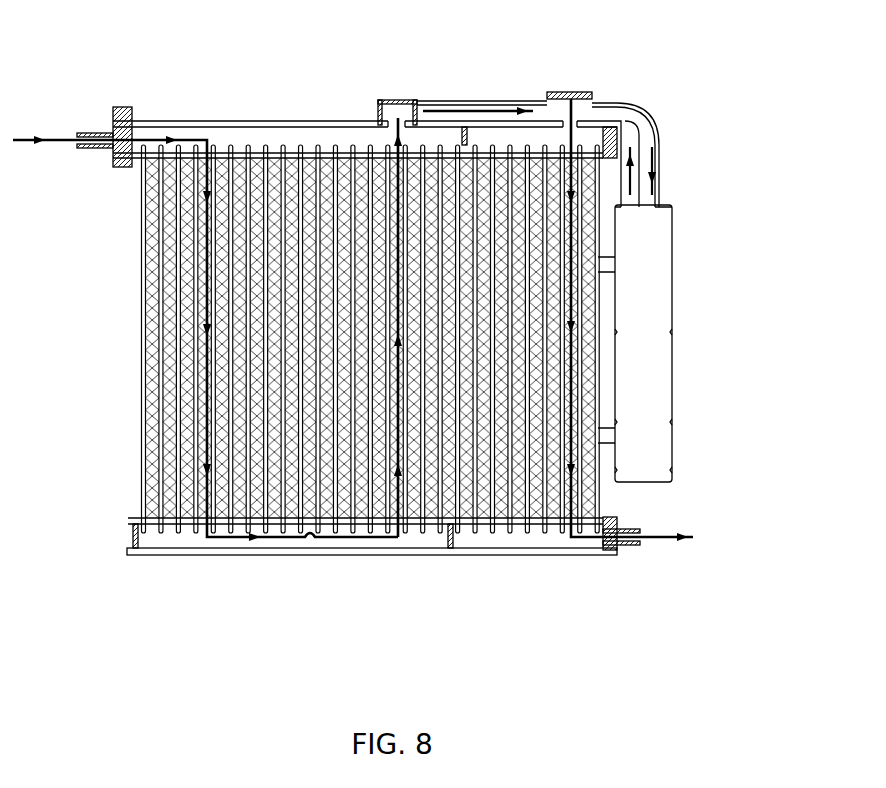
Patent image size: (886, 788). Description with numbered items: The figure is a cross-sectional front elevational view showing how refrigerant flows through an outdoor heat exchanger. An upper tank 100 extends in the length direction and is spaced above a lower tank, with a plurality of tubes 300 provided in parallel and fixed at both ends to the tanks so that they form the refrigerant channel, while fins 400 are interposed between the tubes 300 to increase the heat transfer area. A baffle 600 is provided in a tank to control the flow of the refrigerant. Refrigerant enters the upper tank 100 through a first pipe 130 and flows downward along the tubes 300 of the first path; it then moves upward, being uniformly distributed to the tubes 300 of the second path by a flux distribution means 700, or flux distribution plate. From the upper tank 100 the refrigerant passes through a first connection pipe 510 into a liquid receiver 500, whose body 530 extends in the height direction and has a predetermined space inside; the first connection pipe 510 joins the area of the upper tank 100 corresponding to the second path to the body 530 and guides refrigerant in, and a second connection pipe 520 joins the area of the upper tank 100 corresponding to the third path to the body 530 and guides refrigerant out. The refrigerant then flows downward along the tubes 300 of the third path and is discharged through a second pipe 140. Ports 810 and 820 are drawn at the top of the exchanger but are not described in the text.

The upper tank 100 is at (220, 121).
The first pipe 130 is at (92, 133).
The second pipe 140 is at (627, 546).
The tubes 300 is at (161, 330).
The fins 400 is at (158, 388).
The liquid receiver 500 is at (706, 240).
The first connection pipe 510 is at (656, 117).
The second connection pipe 520 is at (660, 132).
The body 530 is at (672, 325).
The baffle 600 is at (450, 546).
The flux distribution means 700 is at (310, 541).
The first connection port 810 is at (397, 100).
The second connection port 820 is at (567, 92).